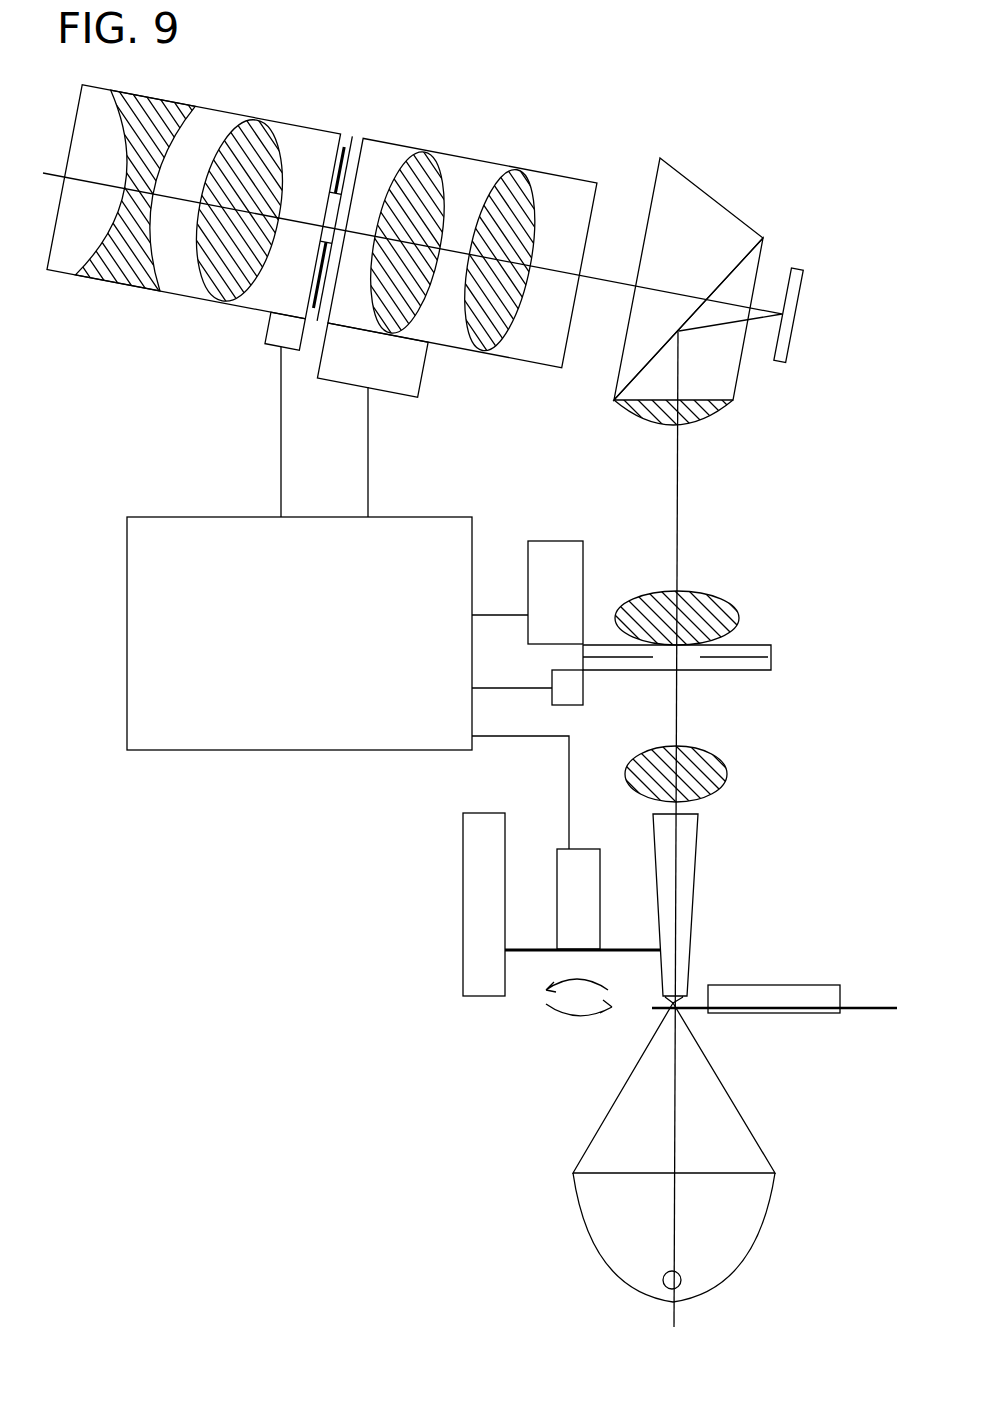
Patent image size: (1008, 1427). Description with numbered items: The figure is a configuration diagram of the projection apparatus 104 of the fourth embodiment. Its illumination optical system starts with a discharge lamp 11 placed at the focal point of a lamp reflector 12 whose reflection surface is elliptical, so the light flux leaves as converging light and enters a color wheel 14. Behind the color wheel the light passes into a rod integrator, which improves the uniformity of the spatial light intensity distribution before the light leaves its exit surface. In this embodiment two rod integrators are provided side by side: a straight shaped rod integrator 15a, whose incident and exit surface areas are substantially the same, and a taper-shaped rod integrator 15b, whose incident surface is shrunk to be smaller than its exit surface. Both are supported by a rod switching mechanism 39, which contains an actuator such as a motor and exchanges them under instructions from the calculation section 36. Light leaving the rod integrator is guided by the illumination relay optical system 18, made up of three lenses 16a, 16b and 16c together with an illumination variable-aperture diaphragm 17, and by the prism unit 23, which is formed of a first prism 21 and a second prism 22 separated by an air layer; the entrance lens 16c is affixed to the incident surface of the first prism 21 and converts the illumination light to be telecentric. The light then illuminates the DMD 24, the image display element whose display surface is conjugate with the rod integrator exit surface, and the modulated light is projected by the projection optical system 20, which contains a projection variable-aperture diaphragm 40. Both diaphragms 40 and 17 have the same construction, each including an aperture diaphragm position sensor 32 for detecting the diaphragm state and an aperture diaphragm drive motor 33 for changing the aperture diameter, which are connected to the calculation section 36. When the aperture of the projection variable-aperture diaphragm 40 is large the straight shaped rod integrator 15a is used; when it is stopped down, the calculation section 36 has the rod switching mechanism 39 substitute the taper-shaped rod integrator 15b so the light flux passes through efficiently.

The discharge lamp 11 is at (678, 1282).
The lamp reflector 12 is at (608, 1263).
The color wheel 14 is at (775, 997).
The straight shaped rod integrator 15a is at (472, 888).
The taper-shaped rod integrator 15b is at (690, 888).
The lens 16a is at (803, 408).
The lens 16b is at (720, 612).
The entrance lens 16c is at (715, 412).
The illumination variable-aperture diaphragm 17 is at (728, 667).
The illumination relay optical system 18 is at (729, 600).
The projection optical system 20 is at (222, 122).
The first prism 21 is at (722, 298).
The second prism 22 is at (717, 215).
The prism unit 23 is at (725, 266).
The DMD 24 is at (795, 302).
The aperture diaphragm position sensor 32 is at (278, 332).
The aperture diaphragm drive motor 33 is at (412, 375).
The calculation section 36 is at (143, 635).
The rod switching mechanism 39 is at (590, 857).
The projection variable-aperture diaphragm 40 is at (357, 160).
The projection apparatus 104 is at (716, 138).